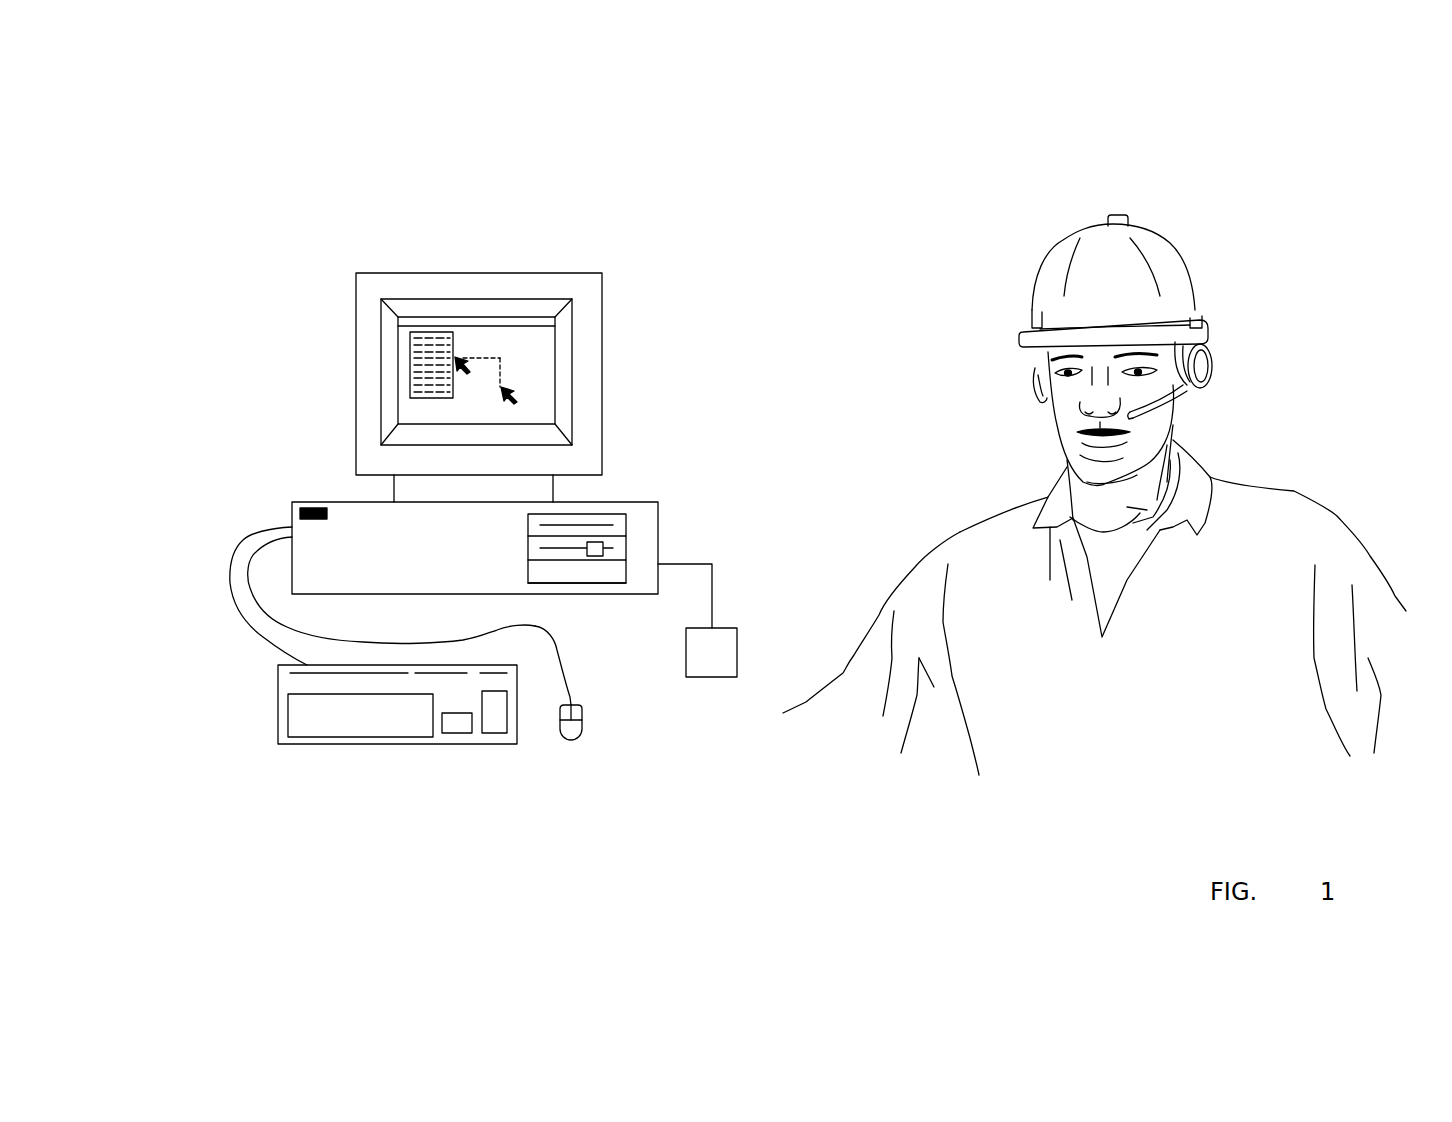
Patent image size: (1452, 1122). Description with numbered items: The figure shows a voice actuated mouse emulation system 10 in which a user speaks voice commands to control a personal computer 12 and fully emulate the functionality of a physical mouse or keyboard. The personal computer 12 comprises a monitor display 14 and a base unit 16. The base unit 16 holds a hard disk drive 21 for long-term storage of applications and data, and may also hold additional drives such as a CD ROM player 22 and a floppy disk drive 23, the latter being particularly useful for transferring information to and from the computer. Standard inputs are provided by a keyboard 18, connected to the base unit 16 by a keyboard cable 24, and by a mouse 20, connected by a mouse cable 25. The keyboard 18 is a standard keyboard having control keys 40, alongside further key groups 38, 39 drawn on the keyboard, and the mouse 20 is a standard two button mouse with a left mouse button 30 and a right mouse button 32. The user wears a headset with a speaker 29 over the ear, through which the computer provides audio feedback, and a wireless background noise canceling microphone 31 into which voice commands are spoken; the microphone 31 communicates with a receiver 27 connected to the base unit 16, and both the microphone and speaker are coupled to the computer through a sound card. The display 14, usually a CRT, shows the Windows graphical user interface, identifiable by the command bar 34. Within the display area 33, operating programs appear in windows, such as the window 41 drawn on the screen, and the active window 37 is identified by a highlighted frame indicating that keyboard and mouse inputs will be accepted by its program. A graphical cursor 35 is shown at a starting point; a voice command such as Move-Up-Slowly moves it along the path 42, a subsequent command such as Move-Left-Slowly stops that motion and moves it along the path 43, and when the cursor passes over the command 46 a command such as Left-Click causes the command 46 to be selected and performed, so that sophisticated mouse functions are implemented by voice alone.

The system 10 is at (855, 298).
The personal computer 12 is at (232, 332).
The monitor display 14 is at (352, 433).
The base unit 16 is at (310, 500).
The keyboard 18 is at (372, 748).
The mouse 20 is at (582, 735).
The hard disk drive 21 is at (617, 577).
The CD ROM player 22 is at (620, 552).
The floppy disk drive 23 is at (618, 527).
The keyboard cable 24 is at (237, 547).
The mouse cable 25 is at (568, 667).
The receiver 27 is at (727, 628).
The speaker 29 is at (1203, 363).
The left mouse button 30 is at (560, 730).
The microphone 31 is at (1167, 410).
The right mouse button 32 is at (580, 713).
The display area 33 is at (540, 343).
The command bar 34 is at (440, 320).
The cursor 35 is at (462, 358).
The active window 37 is at (405, 405).
The keypad 38 is at (303, 740).
The function keys 39 is at (303, 735).
The control keys 40 is at (295, 719).
The document window 41 is at (408, 348).
The path 42 is at (507, 367).
The path 43 is at (488, 355).
The command 46 is at (418, 335).